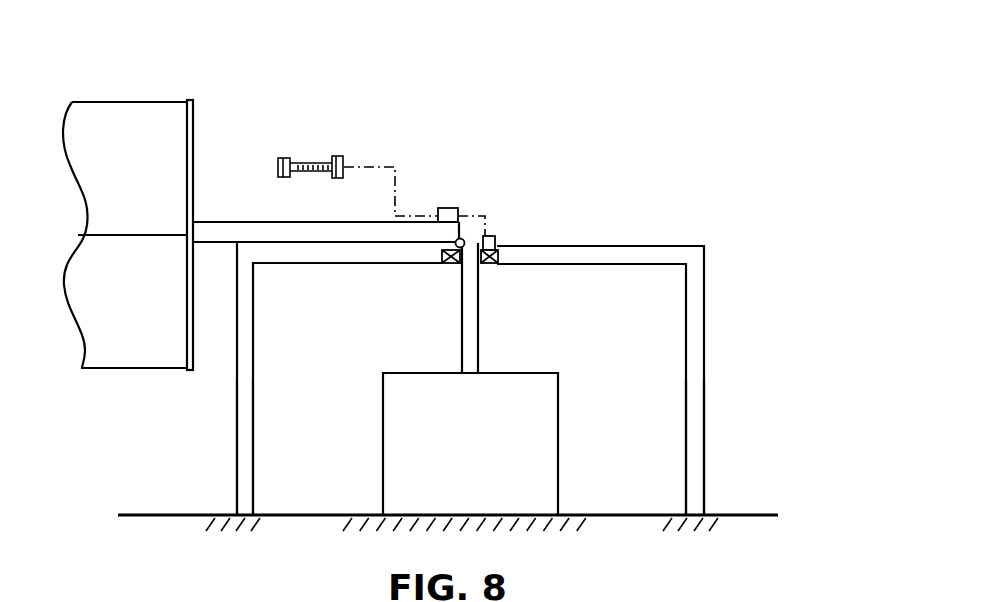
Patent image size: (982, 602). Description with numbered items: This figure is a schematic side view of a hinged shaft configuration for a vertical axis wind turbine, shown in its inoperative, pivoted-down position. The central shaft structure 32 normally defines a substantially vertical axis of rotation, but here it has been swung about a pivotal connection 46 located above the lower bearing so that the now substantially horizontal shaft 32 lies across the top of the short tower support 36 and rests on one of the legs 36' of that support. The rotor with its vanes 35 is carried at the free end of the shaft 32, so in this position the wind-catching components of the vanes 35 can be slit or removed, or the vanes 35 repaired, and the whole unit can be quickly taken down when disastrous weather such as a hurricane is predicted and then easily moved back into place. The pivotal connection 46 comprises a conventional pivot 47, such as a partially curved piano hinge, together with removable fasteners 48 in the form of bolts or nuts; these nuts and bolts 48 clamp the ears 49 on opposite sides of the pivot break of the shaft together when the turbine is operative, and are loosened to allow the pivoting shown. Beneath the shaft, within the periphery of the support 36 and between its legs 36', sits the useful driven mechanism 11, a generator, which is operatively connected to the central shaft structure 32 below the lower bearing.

The vanes 35 is at (150, 75).
The central shaft structure 32 is at (223, 230).
The removable fasteners 48 is at (375, 130).
The pivotal connection 46 is at (515, 200).
The ears 49 is at (447, 207).
The pivot 47 is at (455, 242).
The short tower support 36 is at (525, 353).
The legs 36' is at (480, 434).
The driven mechanism 11 is at (540, 400).